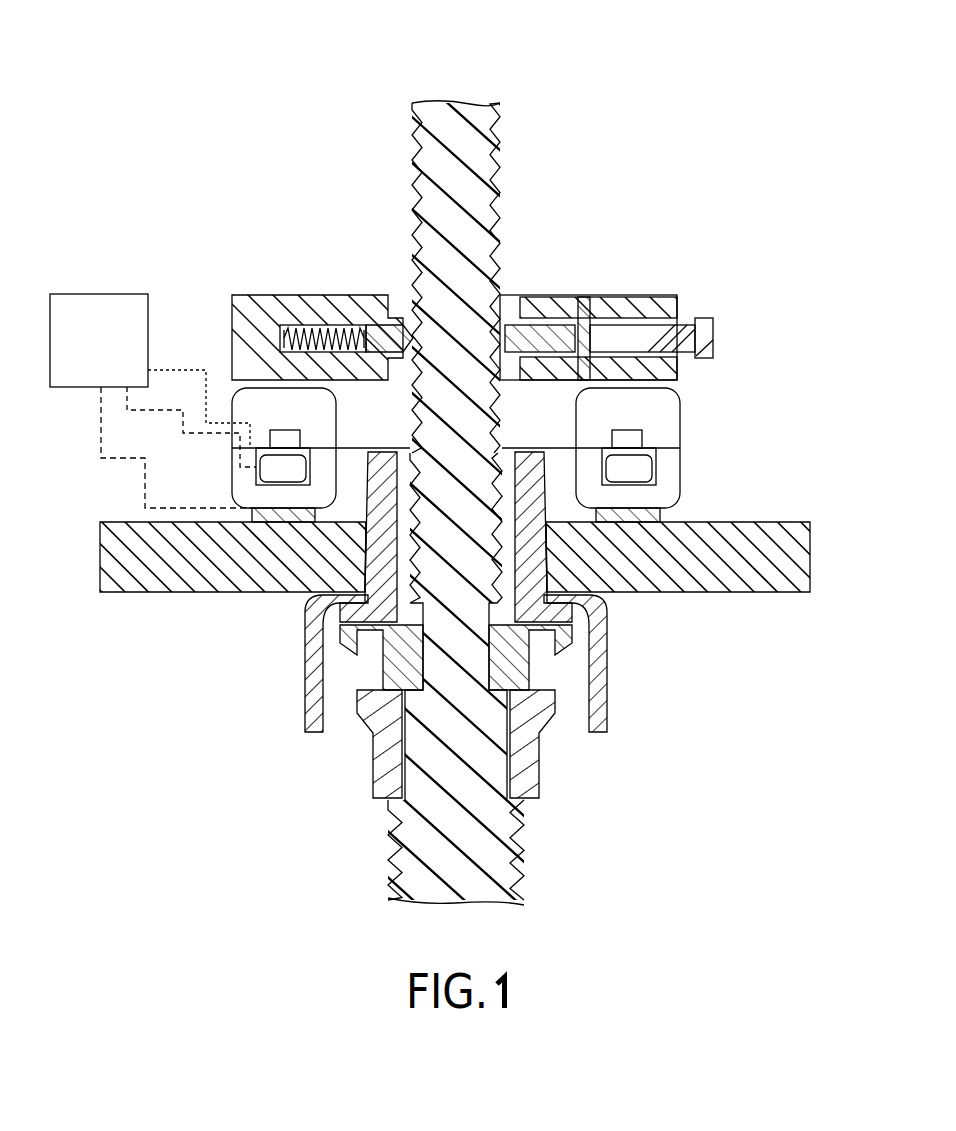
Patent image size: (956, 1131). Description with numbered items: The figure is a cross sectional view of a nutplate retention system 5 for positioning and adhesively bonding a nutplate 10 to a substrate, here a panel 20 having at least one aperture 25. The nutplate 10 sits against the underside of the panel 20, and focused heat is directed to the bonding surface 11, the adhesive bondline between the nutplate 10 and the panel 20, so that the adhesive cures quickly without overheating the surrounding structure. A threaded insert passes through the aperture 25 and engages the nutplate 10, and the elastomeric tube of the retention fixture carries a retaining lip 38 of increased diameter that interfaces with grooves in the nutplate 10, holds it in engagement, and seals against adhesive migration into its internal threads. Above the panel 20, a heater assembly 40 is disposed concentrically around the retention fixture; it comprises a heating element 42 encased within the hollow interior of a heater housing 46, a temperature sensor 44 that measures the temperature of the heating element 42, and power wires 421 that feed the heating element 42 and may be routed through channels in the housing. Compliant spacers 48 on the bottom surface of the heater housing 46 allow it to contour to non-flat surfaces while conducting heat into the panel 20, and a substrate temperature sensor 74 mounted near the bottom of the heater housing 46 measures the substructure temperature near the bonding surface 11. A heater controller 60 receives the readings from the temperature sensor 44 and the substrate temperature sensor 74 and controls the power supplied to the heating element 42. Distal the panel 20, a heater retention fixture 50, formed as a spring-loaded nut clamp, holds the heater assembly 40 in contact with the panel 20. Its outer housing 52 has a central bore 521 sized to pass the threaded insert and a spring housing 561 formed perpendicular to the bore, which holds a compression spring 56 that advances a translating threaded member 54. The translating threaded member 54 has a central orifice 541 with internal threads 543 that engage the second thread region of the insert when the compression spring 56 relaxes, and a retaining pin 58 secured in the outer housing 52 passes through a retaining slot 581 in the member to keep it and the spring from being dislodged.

The nutplate retention system 5 is at (245, 98).
The nutplate 10 is at (540, 760).
The bonding surface 11 is at (572, 585).
The panel 20 is at (118, 568).
The aperture 25 is at (360, 560).
The retaining lip 38 is at (550, 614).
The heater assembly 40 is at (505, 447).
The heating element 42 is at (634, 470).
The power wires 421 is at (183, 426).
The temperature sensor 44 is at (186, 370).
The heater housing 46 is at (650, 418).
The compliant spacers 48 is at (652, 520).
The heater retention fixture 50 is at (484, 300).
The outer housing 52 is at (250, 305).
The central bore 521 is at (508, 300).
The translating threaded member 54 is at (540, 335).
The central orifice 541 is at (665, 318).
The internal threads 543 is at (404, 335).
The compression spring 56 is at (290, 326).
The spring housing 561 is at (338, 330).
The retaining pin 58 is at (584, 330).
The retaining slot 581 is at (615, 335).
The heater controller 60 is at (110, 357).
The substrate temperature sensor 74 is at (140, 477).